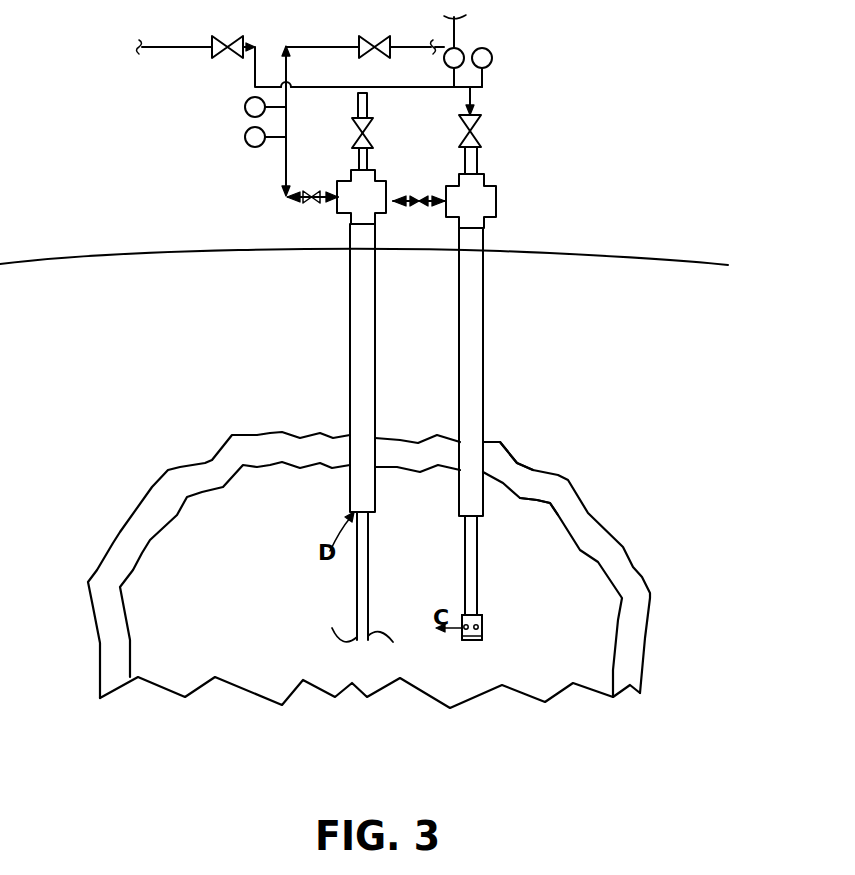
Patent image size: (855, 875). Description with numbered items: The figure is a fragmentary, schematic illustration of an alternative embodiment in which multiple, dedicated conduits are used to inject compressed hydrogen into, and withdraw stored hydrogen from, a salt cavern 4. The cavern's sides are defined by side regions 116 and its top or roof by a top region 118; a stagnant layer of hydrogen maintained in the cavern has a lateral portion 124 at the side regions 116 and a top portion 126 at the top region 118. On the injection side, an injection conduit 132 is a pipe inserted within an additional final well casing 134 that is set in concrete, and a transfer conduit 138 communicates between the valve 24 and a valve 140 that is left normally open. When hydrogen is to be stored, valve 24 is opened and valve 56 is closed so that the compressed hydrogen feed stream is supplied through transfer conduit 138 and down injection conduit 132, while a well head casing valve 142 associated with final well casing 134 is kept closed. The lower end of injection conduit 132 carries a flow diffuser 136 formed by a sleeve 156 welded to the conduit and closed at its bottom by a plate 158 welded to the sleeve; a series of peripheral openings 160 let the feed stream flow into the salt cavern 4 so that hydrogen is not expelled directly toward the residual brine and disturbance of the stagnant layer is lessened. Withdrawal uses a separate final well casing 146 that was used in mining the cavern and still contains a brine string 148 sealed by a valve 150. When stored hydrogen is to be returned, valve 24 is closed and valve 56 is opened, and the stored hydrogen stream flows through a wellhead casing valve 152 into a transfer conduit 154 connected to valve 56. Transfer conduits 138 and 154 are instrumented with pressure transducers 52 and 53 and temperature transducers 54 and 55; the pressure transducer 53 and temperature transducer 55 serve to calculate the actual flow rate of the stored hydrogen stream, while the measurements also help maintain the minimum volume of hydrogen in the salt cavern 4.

The salt cavern 4 is at (640, 513).
The valve 24 is at (218, 54).
The pressure transducer 52 is at (459, 51).
The pressure transducer 53 is at (284, 133).
The temperature transducer 54 is at (492, 55).
The temperature transducer 55 is at (284, 103).
The valve 56 is at (375, 45).
The side regions 116 is at (90, 617).
The top region 118 is at (516, 462).
The lateral portion 124 is at (107, 643).
The top portion 126 is at (550, 487).
The injection conduit 132 is at (470, 556).
The final well casing 134 is at (476, 337).
The flow diffuser 136 is at (486, 611).
The transfer conduit 138 is at (420, 88).
The valve 140 is at (482, 140).
The well head casing valve 142 is at (420, 210).
The final well casing 146 is at (350, 328).
The brine string 148 is at (363, 553).
The valve 150 is at (352, 130).
The wellhead casing valve 152 is at (313, 206).
The transfer conduit 154 is at (285, 172).
The sleeve 156 is at (462, 614).
The plate 158 is at (470, 641).
The peripheral openings 160 is at (480, 628).